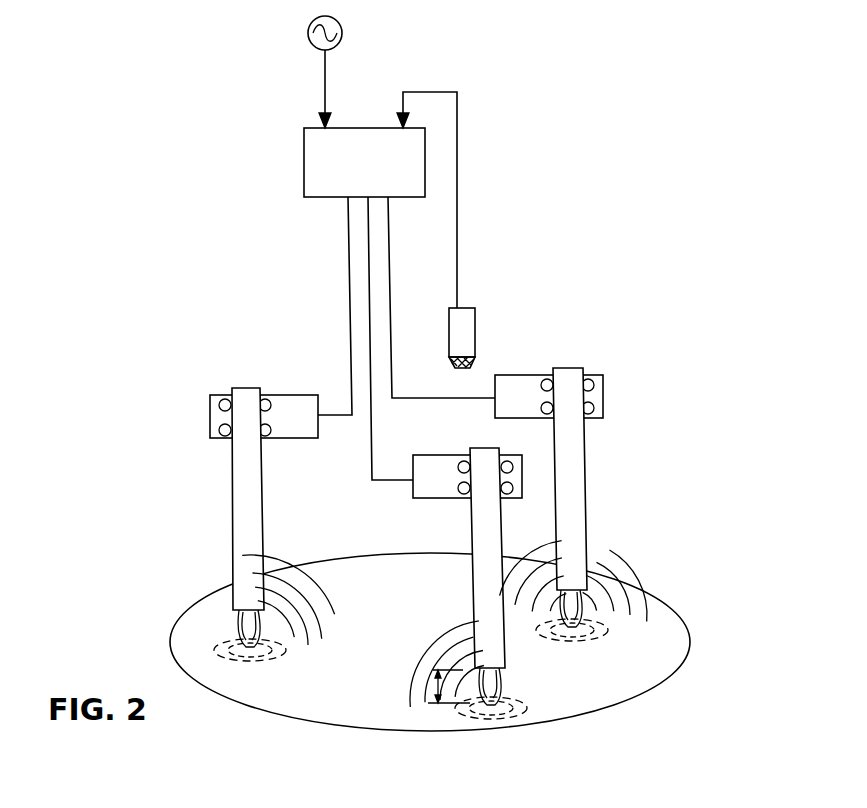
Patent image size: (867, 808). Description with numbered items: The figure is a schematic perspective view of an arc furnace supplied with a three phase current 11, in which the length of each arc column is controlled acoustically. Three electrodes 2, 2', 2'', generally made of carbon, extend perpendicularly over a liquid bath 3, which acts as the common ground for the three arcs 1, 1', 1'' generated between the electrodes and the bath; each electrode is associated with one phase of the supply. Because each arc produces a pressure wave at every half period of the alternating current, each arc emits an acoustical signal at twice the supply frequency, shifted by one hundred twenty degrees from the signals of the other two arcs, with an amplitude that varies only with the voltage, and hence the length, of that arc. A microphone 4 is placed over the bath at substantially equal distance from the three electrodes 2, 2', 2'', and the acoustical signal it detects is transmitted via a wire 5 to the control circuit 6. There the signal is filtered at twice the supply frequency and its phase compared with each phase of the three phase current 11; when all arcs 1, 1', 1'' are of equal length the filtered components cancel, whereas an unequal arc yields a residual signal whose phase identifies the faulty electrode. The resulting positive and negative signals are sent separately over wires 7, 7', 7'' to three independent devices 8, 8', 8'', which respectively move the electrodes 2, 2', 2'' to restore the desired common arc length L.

The arc 1 is at (253, 608).
The arc 1' is at (481, 670).
The arc 1'' is at (600, 591).
The electrode 2 is at (223, 499).
The electrode 2' is at (459, 558).
The electrode 2'' is at (598, 479).
The liquid bath 3 is at (385, 665).
The microphone 4 is at (475, 330).
The wire 5 is at (457, 165).
The control circuit 6 is at (304, 157).
The wire 7 is at (324, 306).
The wire 7' is at (355, 338).
The wire 7'' is at (441, 297).
The device 8 is at (241, 416).
The device 8' is at (450, 491).
The device 8'' is at (576, 394).
The three phase current 11 is at (325, 80).
The arc length L is at (441, 686).